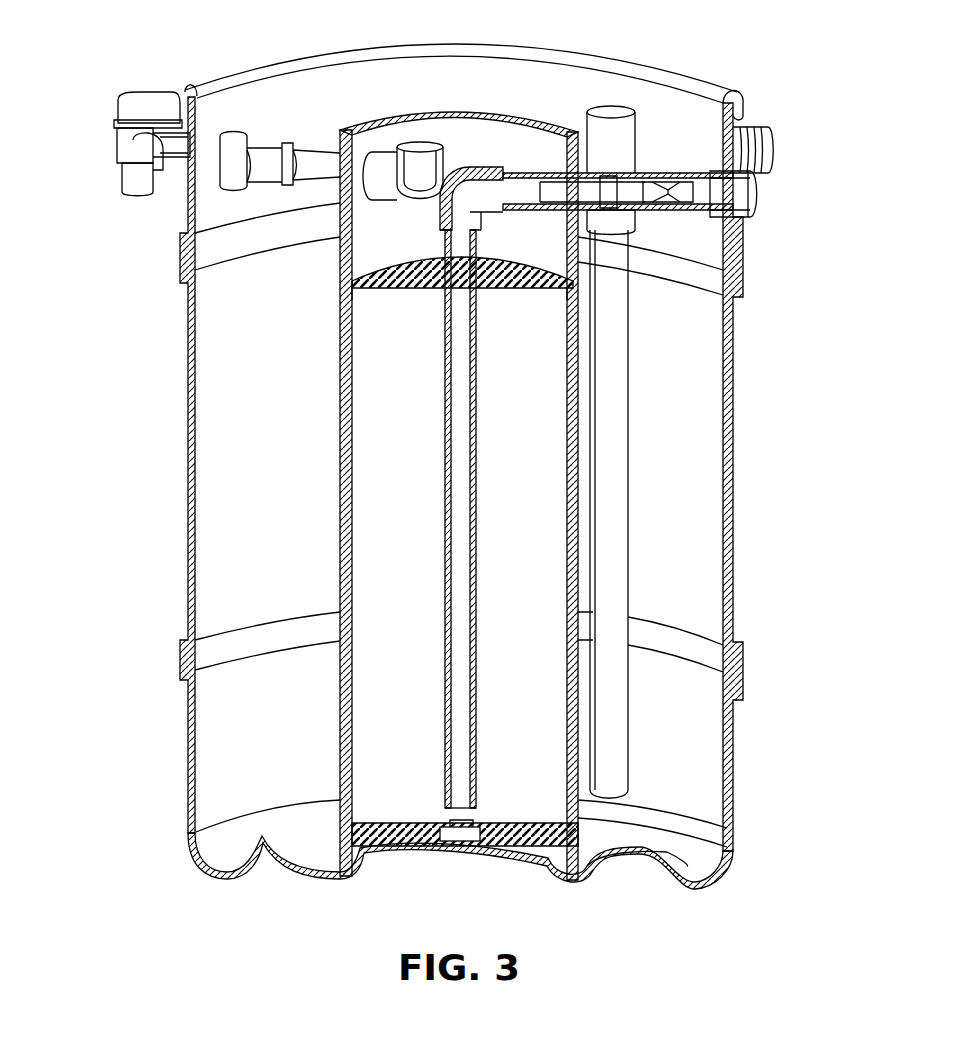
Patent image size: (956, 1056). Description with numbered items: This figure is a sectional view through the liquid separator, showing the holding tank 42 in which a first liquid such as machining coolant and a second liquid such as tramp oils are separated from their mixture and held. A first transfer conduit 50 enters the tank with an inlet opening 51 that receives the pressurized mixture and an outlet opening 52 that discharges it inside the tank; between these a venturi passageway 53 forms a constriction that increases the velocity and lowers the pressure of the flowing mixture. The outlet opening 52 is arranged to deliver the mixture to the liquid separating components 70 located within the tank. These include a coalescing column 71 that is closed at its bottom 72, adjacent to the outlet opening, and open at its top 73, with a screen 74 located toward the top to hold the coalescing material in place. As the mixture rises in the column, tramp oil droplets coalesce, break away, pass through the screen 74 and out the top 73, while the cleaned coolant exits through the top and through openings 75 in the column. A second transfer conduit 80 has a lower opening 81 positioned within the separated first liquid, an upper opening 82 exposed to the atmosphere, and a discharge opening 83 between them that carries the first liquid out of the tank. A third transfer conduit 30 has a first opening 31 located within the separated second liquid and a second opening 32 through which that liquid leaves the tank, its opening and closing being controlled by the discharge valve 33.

The third transfer conduit 30 is at (288, 132).
The first opening 31 is at (411, 143).
The second opening 32 is at (140, 197).
The discharge valve 33 is at (147, 105).
The holding tank 42 is at (733, 400).
The first transfer conduit 50 is at (637, 487).
The inlet opening 51 is at (757, 197).
The outlet opening 52 is at (477, 806).
The venturi passageway 53 is at (672, 207).
The liquid separating components 70 is at (402, 477).
The coalescing column 71 is at (342, 388).
The bottom 72 is at (390, 823).
The top 73 is at (494, 112).
The screen 74 is at (417, 257).
The openings 75 is at (340, 290).
The second transfer conduit 80 is at (711, 443).
The lower opening 81 is at (618, 807).
The upper opening 82 is at (611, 107).
The discharge opening 83 is at (773, 152).